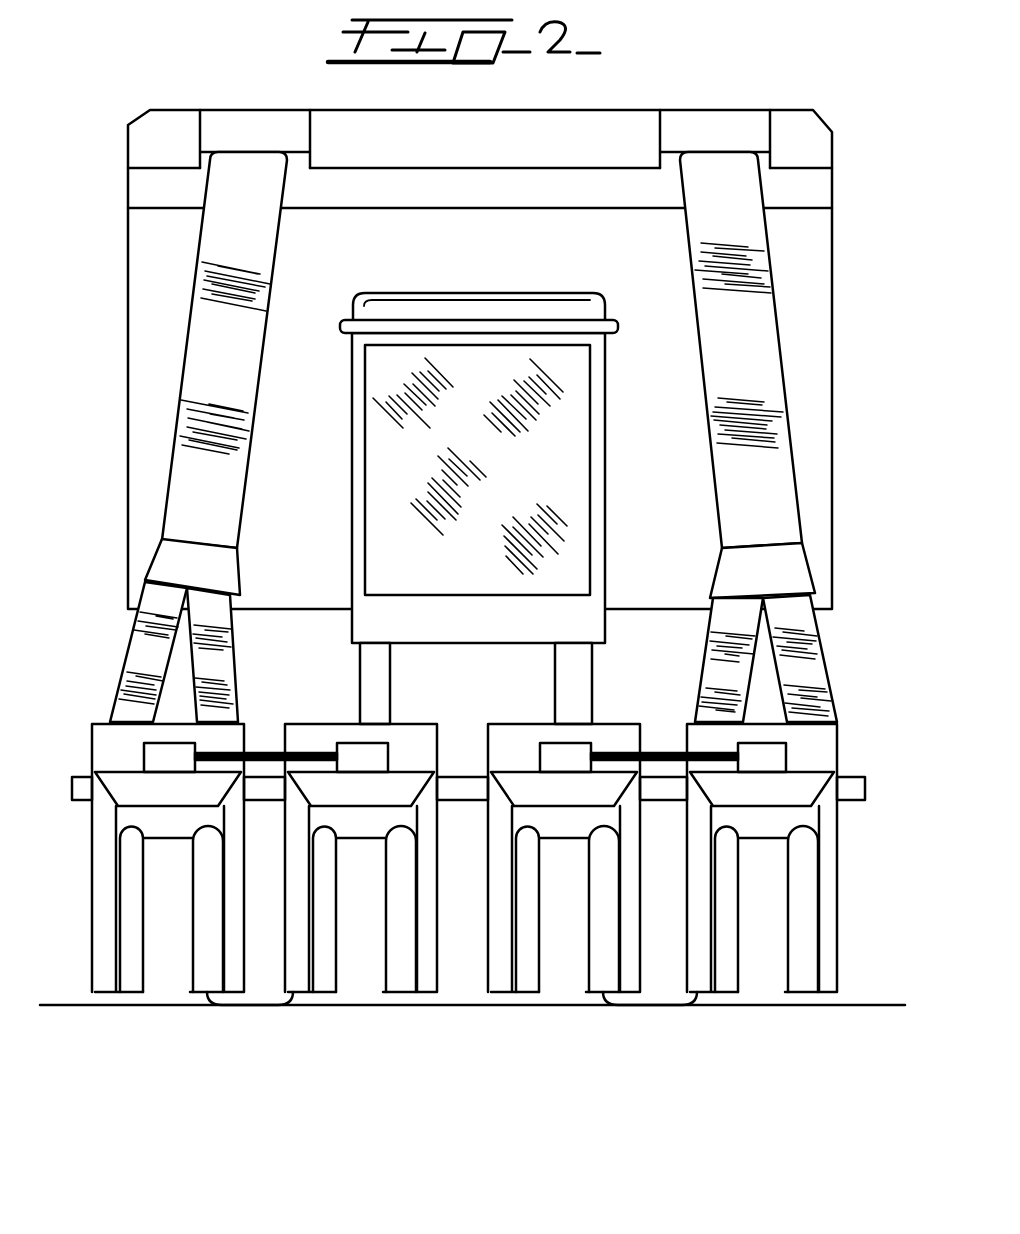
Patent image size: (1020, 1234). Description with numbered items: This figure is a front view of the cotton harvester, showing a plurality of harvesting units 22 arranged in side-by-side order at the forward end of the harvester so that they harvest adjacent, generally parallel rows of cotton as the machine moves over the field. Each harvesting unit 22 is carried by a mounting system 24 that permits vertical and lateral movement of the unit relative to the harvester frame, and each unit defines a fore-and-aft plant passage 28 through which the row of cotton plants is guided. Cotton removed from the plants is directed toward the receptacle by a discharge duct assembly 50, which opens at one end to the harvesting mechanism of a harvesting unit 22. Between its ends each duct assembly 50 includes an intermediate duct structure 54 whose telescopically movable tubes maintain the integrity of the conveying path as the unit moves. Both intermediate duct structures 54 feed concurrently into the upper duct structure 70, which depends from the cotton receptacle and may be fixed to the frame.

The discharge duct assembly 50 is at (145, 516).
The upper duct structure 70 is at (276, 278).
The intermediate duct structure 54 is at (107, 678).
The mounting system 24 is at (867, 765).
The plant passage 28 is at (143, 968).
The harvesting unit 22 is at (197, 1018).